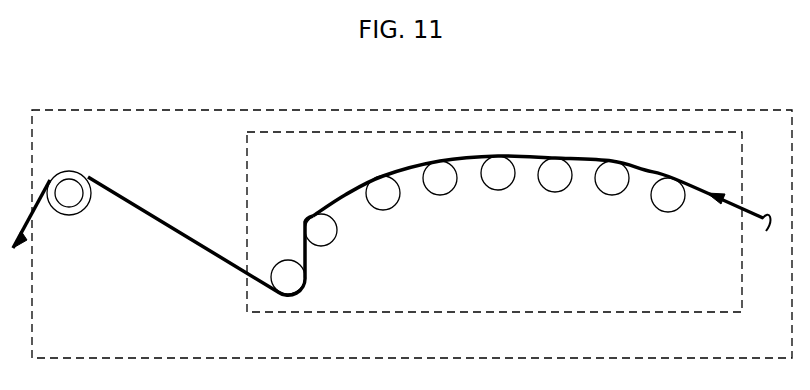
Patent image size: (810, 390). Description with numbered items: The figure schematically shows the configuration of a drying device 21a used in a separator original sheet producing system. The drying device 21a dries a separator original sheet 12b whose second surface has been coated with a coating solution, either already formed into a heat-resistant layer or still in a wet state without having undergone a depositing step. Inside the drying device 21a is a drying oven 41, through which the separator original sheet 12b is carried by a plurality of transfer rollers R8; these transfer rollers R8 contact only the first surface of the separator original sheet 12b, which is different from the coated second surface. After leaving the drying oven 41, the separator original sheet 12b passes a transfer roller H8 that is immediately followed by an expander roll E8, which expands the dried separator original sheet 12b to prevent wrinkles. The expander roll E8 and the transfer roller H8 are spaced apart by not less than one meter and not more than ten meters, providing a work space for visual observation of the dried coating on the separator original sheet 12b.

The drying device 21a is at (741, 106).
The drying oven 41 is at (699, 317).
The separator original sheet 12b is at (698, 188).
The expander roll E8 is at (72, 215).
The transfer roller H8 is at (287, 260).
The transfer rollers R8 is at (320, 214).